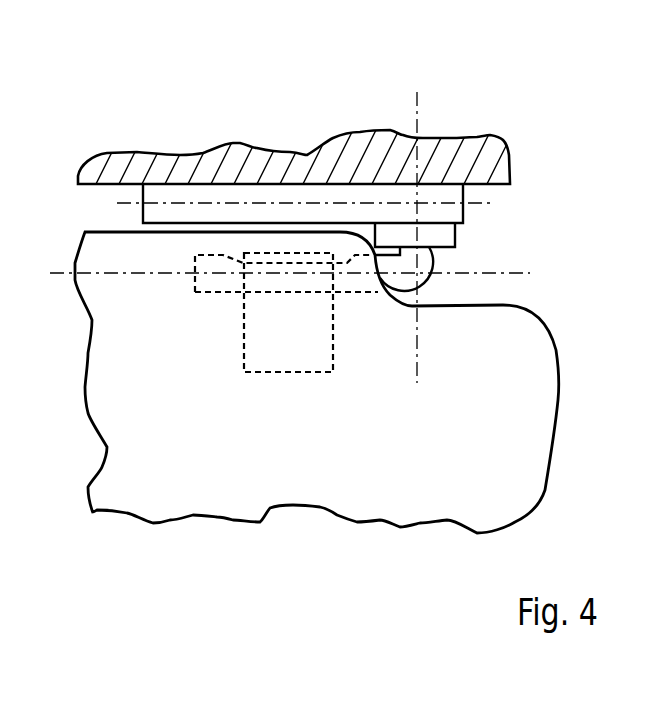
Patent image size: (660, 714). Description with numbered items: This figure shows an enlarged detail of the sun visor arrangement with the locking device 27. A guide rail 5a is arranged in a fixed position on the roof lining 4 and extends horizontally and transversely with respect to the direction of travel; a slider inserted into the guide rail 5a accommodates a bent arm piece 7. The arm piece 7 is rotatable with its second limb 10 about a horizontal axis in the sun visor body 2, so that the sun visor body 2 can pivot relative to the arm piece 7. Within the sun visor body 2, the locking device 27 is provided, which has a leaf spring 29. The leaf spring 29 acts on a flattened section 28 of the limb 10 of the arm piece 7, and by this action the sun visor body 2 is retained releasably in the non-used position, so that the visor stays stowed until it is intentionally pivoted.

The sun visor body 2 is at (517, 375).
The roof lining 4 is at (477, 153).
The guide rail 5a is at (462, 199).
The arm piece 7 is at (438, 265).
The second limb 10 is at (210, 285).
The locking device 27 is at (348, 305).
The flattened section 28 is at (350, 262).
The leaf spring 29 is at (278, 348).